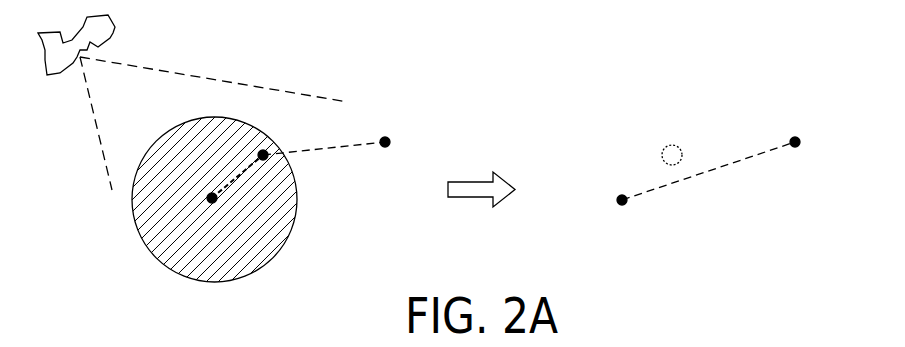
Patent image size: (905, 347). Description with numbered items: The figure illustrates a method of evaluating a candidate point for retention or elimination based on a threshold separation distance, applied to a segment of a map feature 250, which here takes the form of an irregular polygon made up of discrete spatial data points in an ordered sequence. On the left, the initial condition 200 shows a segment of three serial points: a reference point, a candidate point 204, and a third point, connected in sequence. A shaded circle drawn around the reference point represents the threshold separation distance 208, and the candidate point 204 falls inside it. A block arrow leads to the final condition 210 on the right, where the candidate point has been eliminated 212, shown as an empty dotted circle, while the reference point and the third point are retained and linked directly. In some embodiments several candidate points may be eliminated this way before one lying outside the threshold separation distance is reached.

The initial condition 200 is at (300, 52).
The candidate point 204 is at (264, 150).
The threshold separation distance 208 is at (168, 131).
The final condition 210 is at (607, 91).
The eliminated candidate point 212 is at (667, 146).
The map feature 250 is at (115, 22).